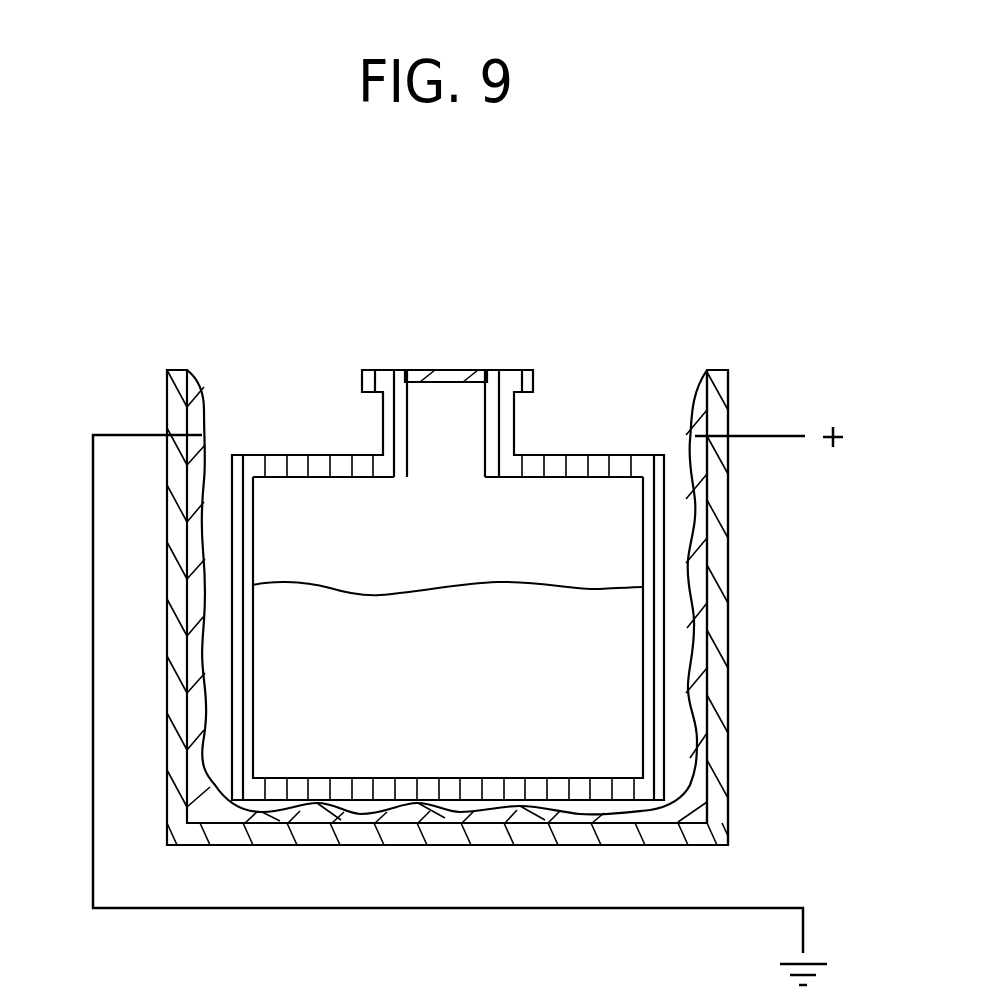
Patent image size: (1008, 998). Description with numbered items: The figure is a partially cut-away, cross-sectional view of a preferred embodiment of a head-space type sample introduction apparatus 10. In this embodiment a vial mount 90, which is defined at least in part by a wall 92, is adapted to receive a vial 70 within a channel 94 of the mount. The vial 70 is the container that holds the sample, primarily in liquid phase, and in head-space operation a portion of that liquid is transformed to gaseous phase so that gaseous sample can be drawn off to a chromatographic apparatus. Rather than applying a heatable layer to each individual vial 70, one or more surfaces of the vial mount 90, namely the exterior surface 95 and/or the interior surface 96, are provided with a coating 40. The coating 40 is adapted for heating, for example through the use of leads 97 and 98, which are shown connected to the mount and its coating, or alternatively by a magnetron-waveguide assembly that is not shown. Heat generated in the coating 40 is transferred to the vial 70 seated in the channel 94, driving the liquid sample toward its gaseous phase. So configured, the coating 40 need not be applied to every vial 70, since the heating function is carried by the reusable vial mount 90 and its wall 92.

The sample introduction apparatus 10 is at (602, 253).
The coating 40 is at (200, 424).
The vial 70 is at (554, 424).
The vial mount 90 is at (122, 407).
The wall 92 is at (712, 370).
The channel 94 is at (651, 335).
The exterior surface 95 is at (730, 577).
The interior surface 96 is at (707, 652).
The lead 97 is at (772, 432).
The lead 98 is at (782, 909).